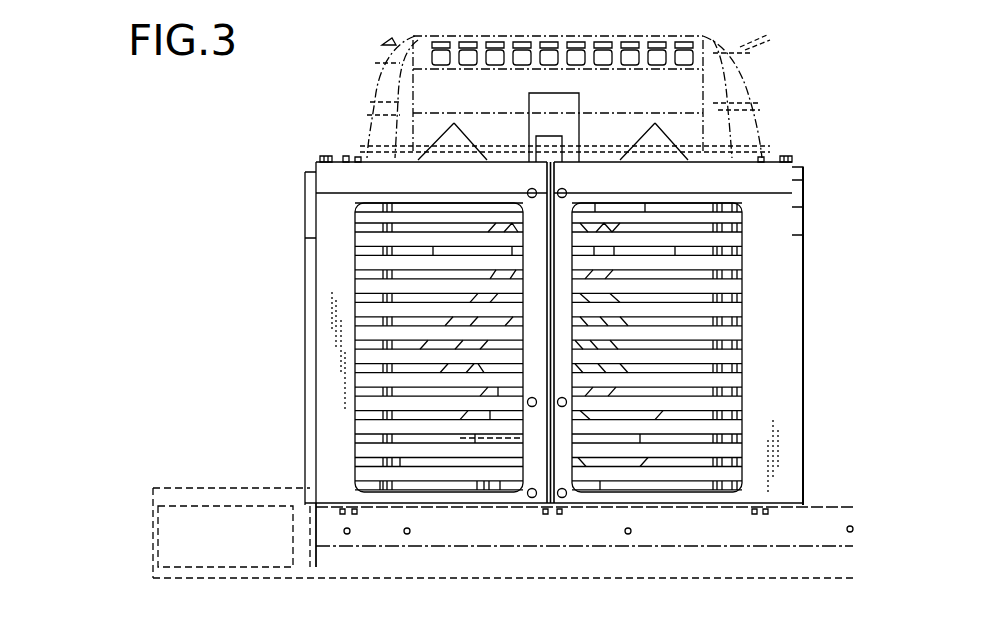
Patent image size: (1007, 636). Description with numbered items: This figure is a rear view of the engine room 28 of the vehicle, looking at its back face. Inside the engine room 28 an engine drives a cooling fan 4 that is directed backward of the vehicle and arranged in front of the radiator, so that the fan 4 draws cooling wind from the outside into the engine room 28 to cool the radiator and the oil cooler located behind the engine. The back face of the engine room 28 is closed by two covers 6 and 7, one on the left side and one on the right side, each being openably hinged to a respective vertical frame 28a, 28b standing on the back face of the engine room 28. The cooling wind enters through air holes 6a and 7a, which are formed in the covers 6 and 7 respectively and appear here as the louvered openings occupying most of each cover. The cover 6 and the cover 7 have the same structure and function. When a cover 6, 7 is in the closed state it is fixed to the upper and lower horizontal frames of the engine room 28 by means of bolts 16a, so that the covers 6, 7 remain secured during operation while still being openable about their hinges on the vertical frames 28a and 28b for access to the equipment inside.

The engine room 28 is at (341, 147).
The cooling fan 4 is at (675, 132).
The cover 6 is at (398, 343).
The air hole 6a is at (372, 268).
The cover 7 is at (700, 343).
The air hole 7a is at (727, 263).
The vertical frame 28a is at (310, 445).
The vertical frame 28b is at (795, 448).
The bolt 16a is at (537, 498).